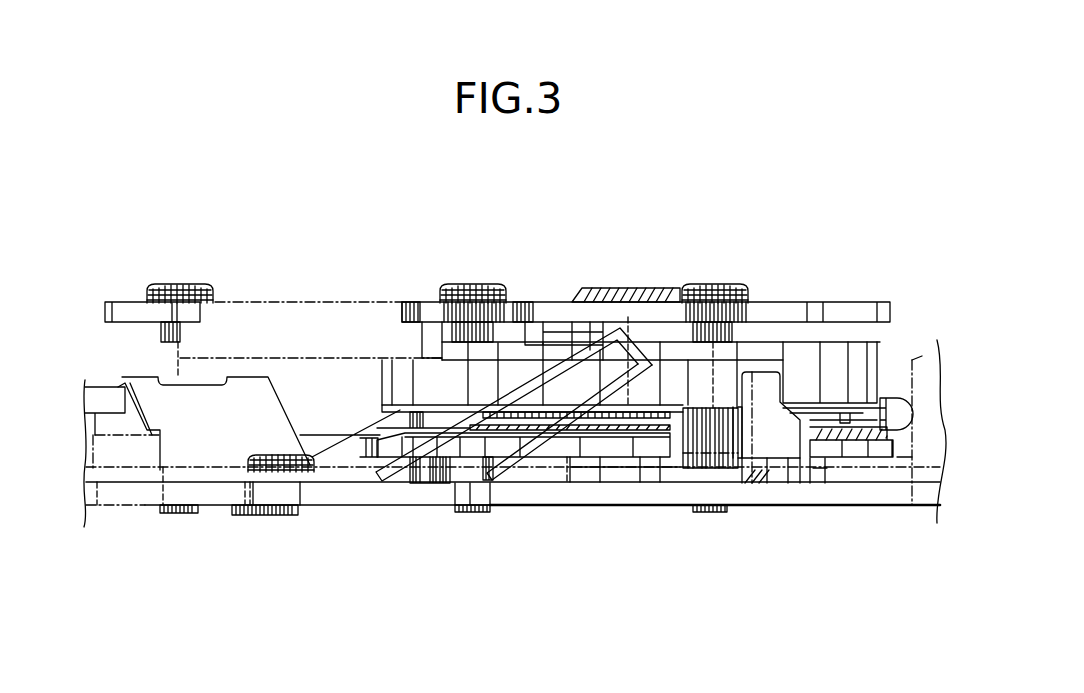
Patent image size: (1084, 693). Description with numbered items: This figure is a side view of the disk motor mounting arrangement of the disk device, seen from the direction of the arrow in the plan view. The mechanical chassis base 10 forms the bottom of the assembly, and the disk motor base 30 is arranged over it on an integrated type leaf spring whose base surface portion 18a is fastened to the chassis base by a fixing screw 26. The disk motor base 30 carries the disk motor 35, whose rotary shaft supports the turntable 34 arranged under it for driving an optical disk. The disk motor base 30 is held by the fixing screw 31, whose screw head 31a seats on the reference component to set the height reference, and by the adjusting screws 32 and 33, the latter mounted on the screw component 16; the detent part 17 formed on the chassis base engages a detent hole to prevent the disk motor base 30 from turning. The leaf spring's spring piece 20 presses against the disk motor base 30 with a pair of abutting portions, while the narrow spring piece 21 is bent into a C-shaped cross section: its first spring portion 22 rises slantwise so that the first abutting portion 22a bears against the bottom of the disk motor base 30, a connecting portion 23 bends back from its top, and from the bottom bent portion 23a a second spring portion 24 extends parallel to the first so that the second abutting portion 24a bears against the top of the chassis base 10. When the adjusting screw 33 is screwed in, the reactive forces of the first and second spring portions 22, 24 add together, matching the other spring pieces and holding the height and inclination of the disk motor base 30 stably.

The mechanical chassis base 10 is at (389, 500).
The screw component 16 is at (707, 443).
The detent part 17 is at (763, 392).
The base surface portion 18a is at (209, 478).
The spring piece 20 is at (195, 438).
The spring piece 21 is at (557, 365).
The first spring portion 22 is at (487, 410).
The first abutting portion 22a is at (620, 330).
The connecting portion 23 is at (638, 352).
The bottom bent portion 23a is at (648, 383).
The second spring portion 24 is at (593, 437).
The second abutting portion 24a is at (477, 487).
The fixing screw 26 is at (307, 473).
The disk motor base 30 is at (859, 363).
The fixing screw 31 is at (487, 284).
The screw head 31a is at (443, 302).
The adjusting screw 32 is at (182, 284).
The adjusting screw 33 is at (715, 284).
The turntable 34 is at (855, 448).
The disk motor 35 is at (937, 340).